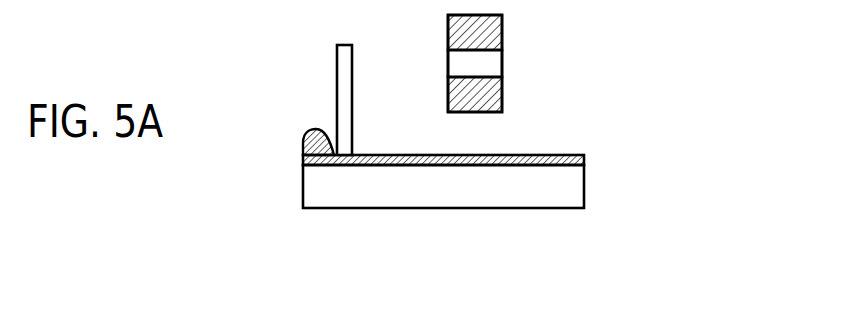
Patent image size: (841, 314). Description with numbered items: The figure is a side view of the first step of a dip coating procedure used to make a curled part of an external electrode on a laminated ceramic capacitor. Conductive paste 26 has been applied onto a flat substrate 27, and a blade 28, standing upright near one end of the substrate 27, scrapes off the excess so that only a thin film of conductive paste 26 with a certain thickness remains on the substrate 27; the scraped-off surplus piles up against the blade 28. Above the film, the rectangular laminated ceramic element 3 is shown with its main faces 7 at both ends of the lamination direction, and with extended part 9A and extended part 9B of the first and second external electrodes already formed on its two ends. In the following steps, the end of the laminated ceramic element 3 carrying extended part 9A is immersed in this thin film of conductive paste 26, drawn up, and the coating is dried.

The laminated ceramic element 3 is at (510, 62).
The main face 7 is at (489, 57).
The extended part 9A is at (502, 100).
The extended part 9B is at (502, 25).
The conductive paste 26 is at (582, 160).
The substrate 27 is at (572, 198).
The blade 28 is at (343, 97).